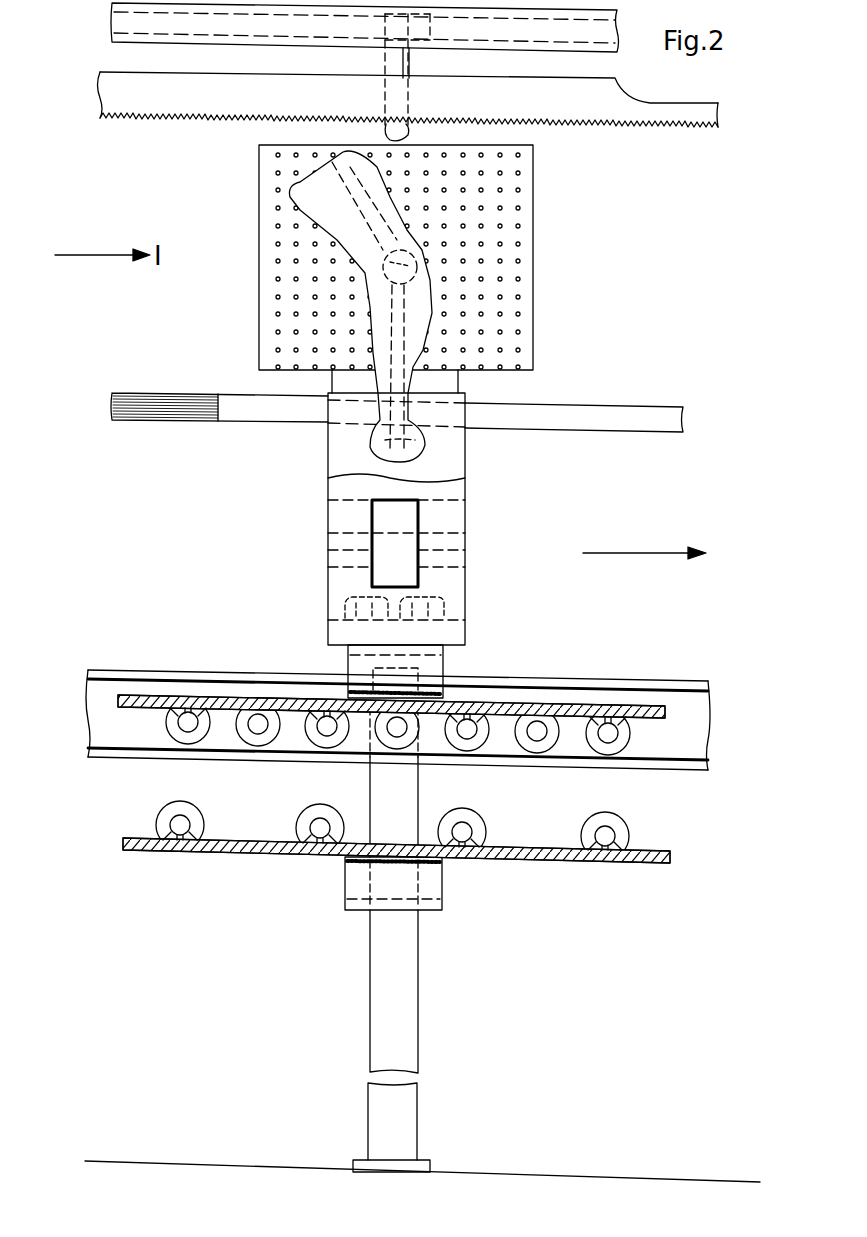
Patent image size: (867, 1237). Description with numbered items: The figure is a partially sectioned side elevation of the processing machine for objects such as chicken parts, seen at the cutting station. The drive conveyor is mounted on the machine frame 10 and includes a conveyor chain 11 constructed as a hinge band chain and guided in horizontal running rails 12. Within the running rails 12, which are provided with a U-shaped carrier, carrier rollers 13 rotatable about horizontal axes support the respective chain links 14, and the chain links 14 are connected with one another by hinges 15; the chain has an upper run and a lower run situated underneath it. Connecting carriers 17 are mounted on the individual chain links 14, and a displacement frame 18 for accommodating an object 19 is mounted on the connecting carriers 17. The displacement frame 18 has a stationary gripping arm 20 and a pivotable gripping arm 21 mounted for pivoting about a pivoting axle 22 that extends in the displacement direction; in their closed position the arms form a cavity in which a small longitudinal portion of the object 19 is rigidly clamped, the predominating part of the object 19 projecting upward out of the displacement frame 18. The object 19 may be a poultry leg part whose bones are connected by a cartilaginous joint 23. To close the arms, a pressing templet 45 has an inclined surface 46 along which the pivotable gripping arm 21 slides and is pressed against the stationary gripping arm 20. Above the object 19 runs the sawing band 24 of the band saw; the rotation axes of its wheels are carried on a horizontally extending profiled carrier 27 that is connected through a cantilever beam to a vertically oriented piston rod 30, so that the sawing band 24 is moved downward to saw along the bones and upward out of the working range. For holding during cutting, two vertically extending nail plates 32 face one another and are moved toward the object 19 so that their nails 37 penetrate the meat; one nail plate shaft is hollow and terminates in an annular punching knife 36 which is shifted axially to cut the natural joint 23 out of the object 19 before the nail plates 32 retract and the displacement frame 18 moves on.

The machine frame 10 is at (397, 1042).
The conveyor chain 11 is at (597, 872).
The running rails 12 is at (125, 738).
The carrier rollers 13 is at (390, 745).
The chain links 14 is at (455, 700).
The hinges 15 is at (480, 814).
The connecting carriers 17 is at (348, 668).
The displacement frame 18 is at (433, 519).
The object 19 is at (296, 197).
The stationary gripping arm 20 is at (452, 493).
The pivotable gripping arm 21 is at (452, 468).
The pivoting axle 22 is at (465, 545).
The cartilaginous joint 23 is at (417, 258).
The sawing band 24 is at (627, 108).
The profiled carrier 27 is at (112, 20).
The piston rod 30 is at (396, 65).
The nail plates 32 is at (432, 269).
The annular punching knife 36 is at (417, 268).
The nails 37 is at (518, 323).
The pressing templet 45 is at (397, 439).
The inclined surface 46 is at (150, 410).